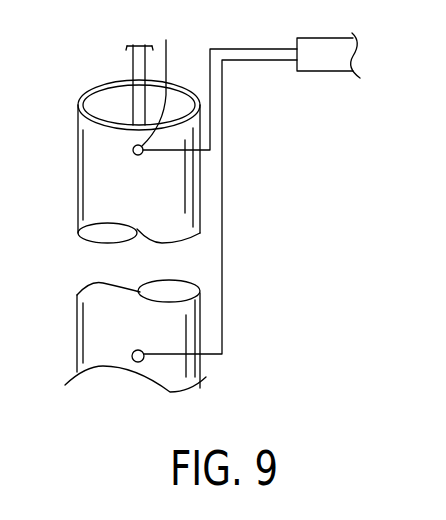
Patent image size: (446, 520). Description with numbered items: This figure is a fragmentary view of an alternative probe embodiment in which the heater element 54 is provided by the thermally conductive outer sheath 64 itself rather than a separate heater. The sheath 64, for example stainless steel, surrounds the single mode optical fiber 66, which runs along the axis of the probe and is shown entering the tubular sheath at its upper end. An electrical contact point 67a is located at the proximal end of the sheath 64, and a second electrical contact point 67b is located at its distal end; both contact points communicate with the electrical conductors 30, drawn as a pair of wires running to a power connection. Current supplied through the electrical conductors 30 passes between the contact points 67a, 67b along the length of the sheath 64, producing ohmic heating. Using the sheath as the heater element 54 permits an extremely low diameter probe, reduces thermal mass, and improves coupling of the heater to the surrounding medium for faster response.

The thermally conductive outer sheath 64 is at (78, 165).
The single mode optical fiber 66 is at (132, 70).
The electrical contact point 67a is at (160, 85).
The electrical contact point 67b is at (144, 359).
The heater element 54 is at (228, 270).
The electrical conductor 30 is at (326, 72).